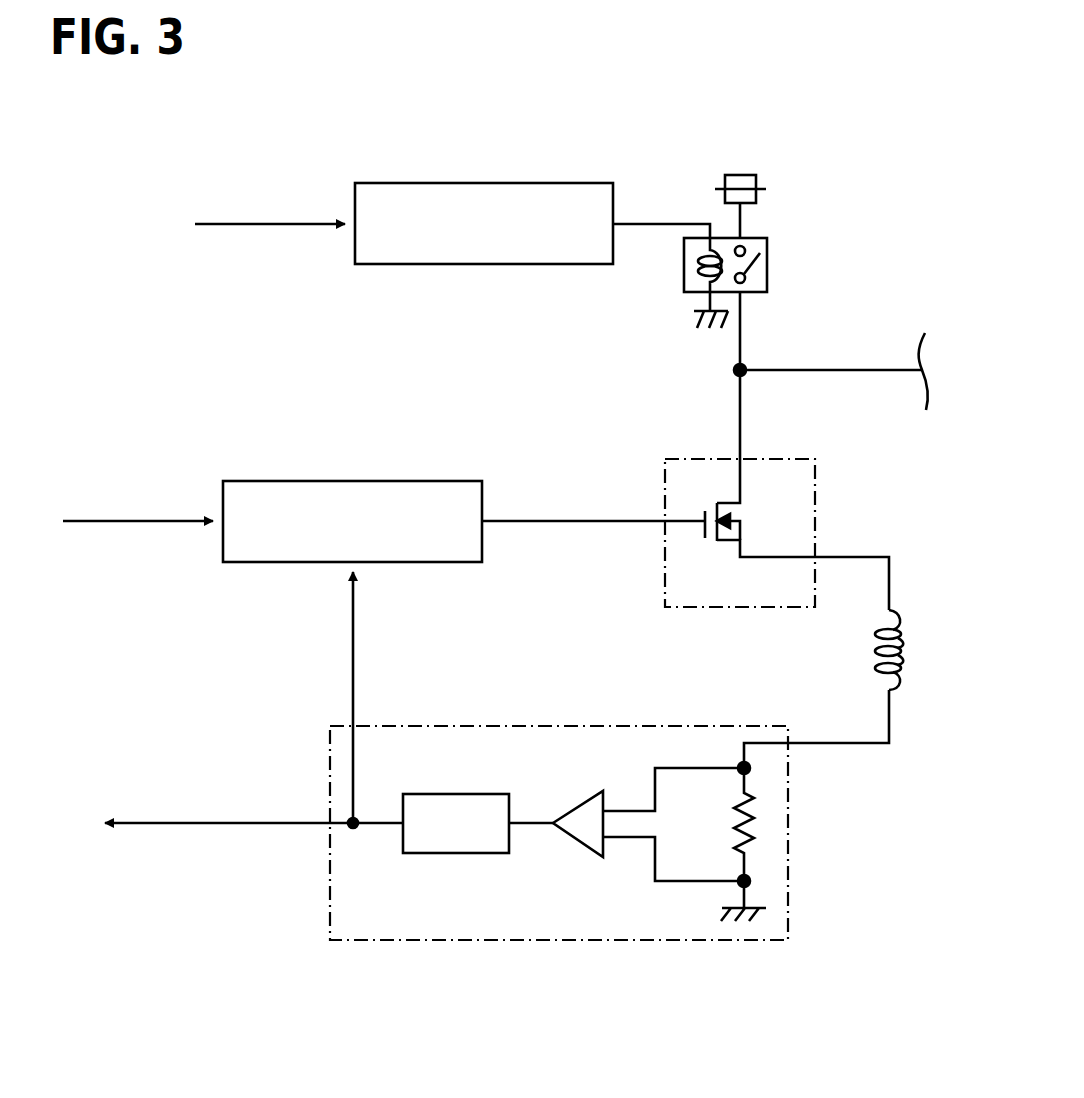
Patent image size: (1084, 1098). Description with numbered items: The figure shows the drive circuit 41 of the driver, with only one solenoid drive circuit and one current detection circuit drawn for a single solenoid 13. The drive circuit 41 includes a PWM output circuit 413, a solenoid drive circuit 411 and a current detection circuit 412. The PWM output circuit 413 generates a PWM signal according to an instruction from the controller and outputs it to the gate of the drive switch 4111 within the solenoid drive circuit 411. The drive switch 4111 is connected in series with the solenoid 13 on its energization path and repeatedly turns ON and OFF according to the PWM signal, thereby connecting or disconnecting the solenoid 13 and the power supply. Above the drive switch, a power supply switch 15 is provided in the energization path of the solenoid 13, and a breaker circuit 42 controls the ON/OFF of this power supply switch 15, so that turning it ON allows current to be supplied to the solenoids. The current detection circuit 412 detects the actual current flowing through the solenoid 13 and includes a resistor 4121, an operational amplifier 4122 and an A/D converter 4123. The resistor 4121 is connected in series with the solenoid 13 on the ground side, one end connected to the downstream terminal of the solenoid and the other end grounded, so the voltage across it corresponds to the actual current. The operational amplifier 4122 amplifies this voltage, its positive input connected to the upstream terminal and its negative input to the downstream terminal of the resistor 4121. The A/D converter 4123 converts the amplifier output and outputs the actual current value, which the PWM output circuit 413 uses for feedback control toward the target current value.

The breaker circuit 42 is at (560, 183).
The power supply switch 15 is at (768, 265).
The drive circuit 41 is at (212, 468).
The PWM output circuit 413 is at (401, 481).
The solenoid drive circuit 411 is at (798, 456).
The drive switch 4111 is at (705, 508).
The solenoid 13 is at (905, 645).
The current detection circuit 412 is at (540, 724).
The A/D converter 4123 is at (416, 793).
The operational amplifier 4122 is at (578, 805).
The resistor 4121 is at (752, 830).